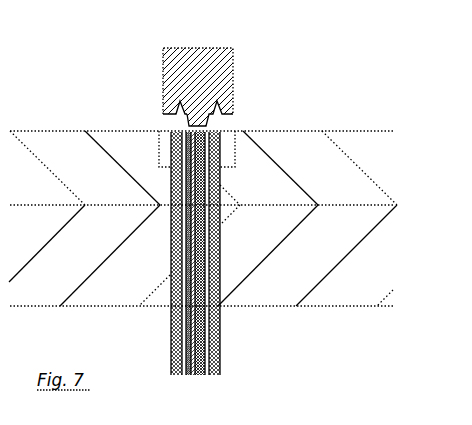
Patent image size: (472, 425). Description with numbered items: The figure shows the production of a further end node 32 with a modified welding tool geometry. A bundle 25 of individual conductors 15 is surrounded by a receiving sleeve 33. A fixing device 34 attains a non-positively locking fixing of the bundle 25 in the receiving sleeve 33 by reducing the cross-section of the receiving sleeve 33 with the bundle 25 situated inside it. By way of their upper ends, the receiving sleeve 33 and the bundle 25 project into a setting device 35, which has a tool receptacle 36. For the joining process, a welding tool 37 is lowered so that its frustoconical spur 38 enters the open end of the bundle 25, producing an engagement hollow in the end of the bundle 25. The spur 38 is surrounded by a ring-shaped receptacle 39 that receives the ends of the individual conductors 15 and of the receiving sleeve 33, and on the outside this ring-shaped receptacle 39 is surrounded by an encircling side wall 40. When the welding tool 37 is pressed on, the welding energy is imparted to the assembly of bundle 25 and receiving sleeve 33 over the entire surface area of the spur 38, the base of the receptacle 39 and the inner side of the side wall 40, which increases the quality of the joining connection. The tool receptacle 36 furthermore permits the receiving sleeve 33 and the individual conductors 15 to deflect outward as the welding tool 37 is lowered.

The individual conductors 15 is at (193, 376).
The bundle 25 is at (200, 346).
The end node 32 is at (261, 118).
The receiving sleeve 33 is at (171, 176).
The fixing device 34 is at (310, 296).
The setting device 35 is at (310, 146).
The tool receptacle 36 is at (166, 147).
The welding tool 37 is at (239, 85).
The frustoconical spur 38 is at (193, 112).
The ring-shaped receptacle 39 is at (174, 108).
The encircling side wall 40 is at (236, 105).